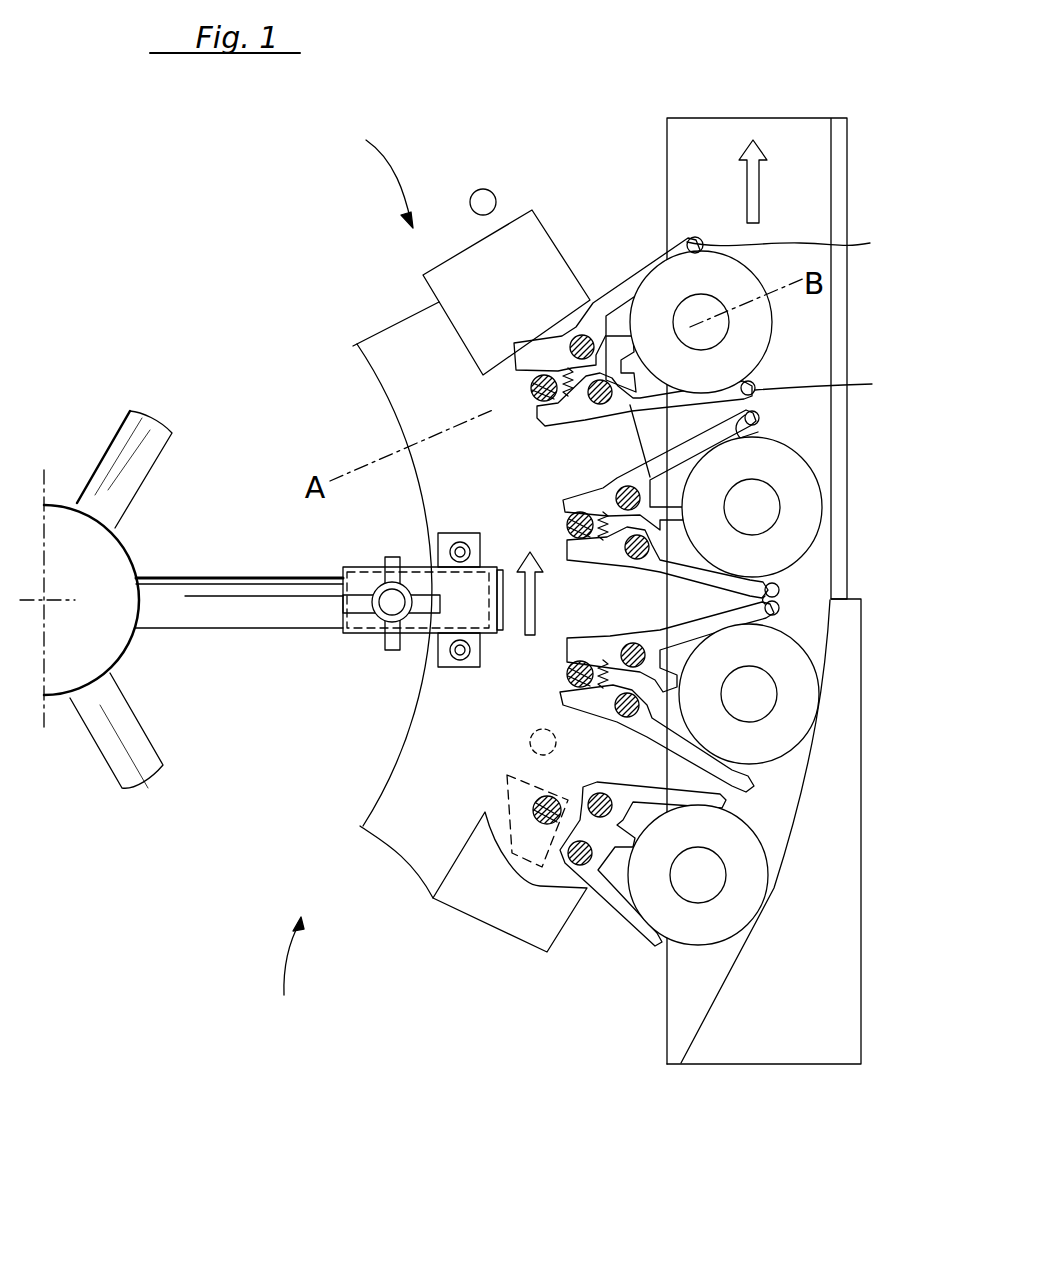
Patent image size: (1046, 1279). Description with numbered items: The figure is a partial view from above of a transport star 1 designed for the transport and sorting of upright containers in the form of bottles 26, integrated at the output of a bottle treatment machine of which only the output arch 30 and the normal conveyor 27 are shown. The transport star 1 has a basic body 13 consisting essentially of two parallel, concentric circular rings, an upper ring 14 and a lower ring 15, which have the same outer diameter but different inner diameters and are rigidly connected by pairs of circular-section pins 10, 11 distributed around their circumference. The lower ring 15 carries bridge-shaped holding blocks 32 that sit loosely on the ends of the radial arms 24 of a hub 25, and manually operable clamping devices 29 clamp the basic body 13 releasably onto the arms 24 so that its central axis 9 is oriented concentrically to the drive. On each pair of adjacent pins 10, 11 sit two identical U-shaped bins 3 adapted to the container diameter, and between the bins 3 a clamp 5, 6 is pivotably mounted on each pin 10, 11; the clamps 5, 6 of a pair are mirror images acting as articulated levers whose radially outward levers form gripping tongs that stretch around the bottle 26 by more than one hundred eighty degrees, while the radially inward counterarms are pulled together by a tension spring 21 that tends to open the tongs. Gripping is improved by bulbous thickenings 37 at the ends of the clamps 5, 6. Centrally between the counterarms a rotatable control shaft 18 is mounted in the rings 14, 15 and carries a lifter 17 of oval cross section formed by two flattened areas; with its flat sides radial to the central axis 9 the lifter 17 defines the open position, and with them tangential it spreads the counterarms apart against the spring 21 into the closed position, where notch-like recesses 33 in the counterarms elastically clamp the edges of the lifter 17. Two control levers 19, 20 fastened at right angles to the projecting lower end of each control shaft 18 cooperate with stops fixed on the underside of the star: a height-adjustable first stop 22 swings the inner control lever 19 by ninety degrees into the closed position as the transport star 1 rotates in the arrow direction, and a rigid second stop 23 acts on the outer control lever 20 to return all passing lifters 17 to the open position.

The transport star 1 is at (288, 972).
The bin 3 is at (752, 609).
The clamp 5 is at (794, 242).
The clamp 6 is at (827, 382).
The central axis 9 is at (45, 600).
The pin 10 is at (568, 868).
The pin 11 is at (602, 818).
The basic body 13 is at (375, 164).
The upper ring 14 is at (530, 257).
The lower ring 15 is at (382, 362).
The lifter 17 is at (532, 390).
The control shaft 18 is at (495, 805).
The inner control lever 19 is at (500, 790).
The outer control lever 20 is at (530, 866).
The tension spring 21 is at (604, 300).
The first stop 22 is at (530, 742).
The second stop 23 is at (483, 190).
The radial arm 24 is at (248, 612).
The hub 25 is at (103, 570).
The bottle 26 is at (792, 524).
The normal conveyor 27 is at (712, 140).
The clamping device 29 is at (388, 612).
The output arch 30 is at (785, 1020).
The holding block 32 is at (440, 656).
The notch-like recess 33 is at (567, 523).
The bulbous thickening 37 is at (760, 425).